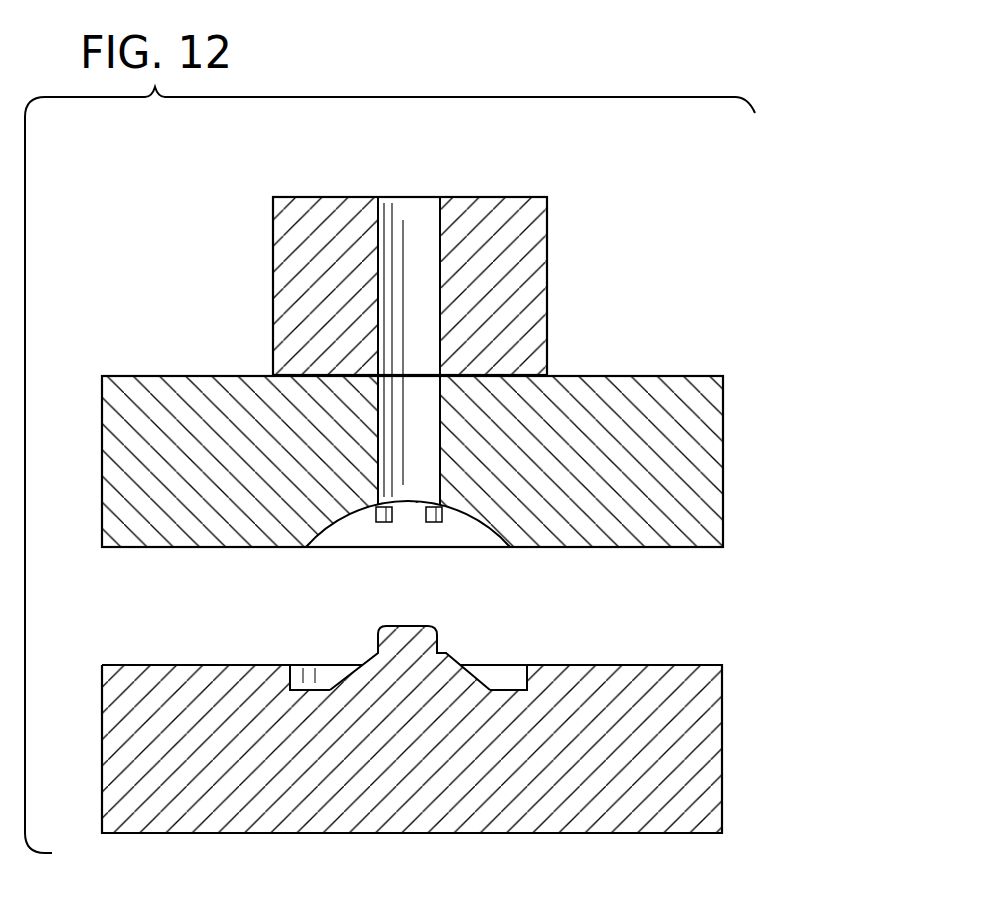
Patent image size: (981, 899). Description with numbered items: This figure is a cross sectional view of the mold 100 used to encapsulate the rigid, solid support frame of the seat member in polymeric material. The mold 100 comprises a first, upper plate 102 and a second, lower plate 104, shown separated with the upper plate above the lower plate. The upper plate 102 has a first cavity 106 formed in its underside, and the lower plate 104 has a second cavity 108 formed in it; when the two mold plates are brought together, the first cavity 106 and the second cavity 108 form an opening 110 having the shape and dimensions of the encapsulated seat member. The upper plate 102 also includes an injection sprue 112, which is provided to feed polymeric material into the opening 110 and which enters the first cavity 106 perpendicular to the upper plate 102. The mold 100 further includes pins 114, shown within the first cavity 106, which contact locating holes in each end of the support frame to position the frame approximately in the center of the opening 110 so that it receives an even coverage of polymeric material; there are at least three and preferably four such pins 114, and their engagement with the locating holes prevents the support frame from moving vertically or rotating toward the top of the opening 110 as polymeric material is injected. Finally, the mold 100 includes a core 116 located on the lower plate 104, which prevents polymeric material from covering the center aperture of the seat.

The mold 100 is at (745, 580).
The upper plate 102 is at (723, 480).
The lower plate 104 is at (722, 742).
The first cavity 106 is at (495, 530).
The second cavity 108 is at (513, 678).
The opening 110 is at (462, 548).
The injection sprue 112 is at (403, 197).
The pins 114 is at (375, 525).
The core 116 is at (384, 632).